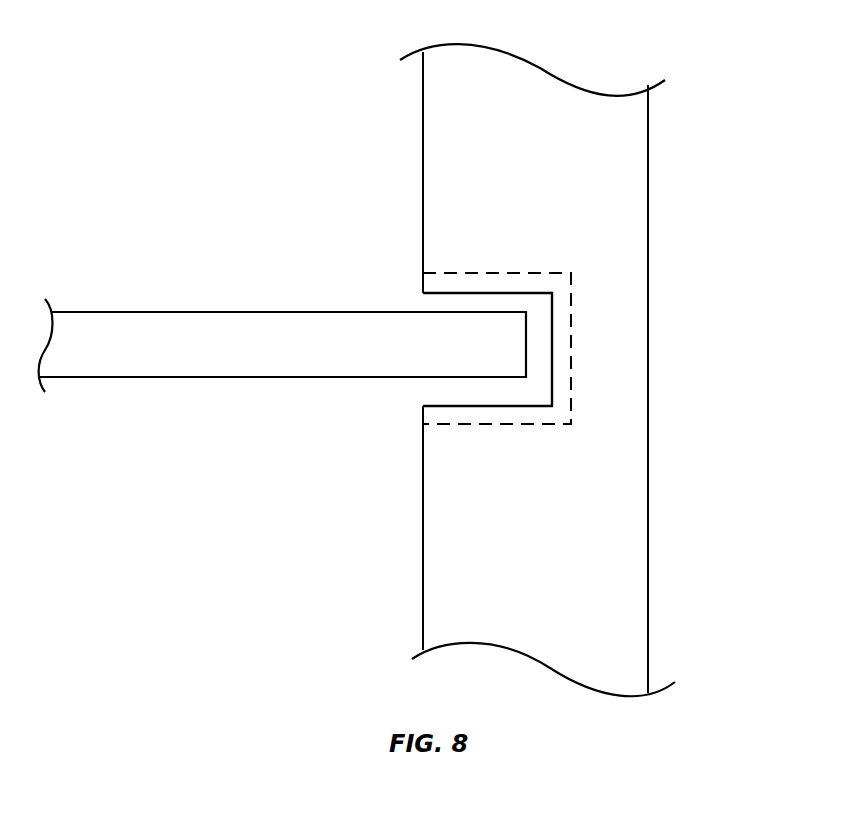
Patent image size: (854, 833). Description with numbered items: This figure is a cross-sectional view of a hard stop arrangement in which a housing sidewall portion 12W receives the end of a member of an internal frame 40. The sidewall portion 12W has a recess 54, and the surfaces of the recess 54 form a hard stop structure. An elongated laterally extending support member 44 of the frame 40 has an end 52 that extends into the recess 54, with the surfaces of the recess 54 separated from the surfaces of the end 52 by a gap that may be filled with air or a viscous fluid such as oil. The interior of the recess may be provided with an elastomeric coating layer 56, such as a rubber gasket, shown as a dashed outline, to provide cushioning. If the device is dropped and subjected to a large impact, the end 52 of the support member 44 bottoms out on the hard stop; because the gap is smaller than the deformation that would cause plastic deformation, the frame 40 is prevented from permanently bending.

The sidewall portion 12W is at (630, 175).
The frame 40 is at (87, 243).
The support member 44 is at (99, 348).
The end 52 is at (448, 347).
The recess 54 is at (418, 393).
The elastomeric coating layer 56 is at (570, 330).